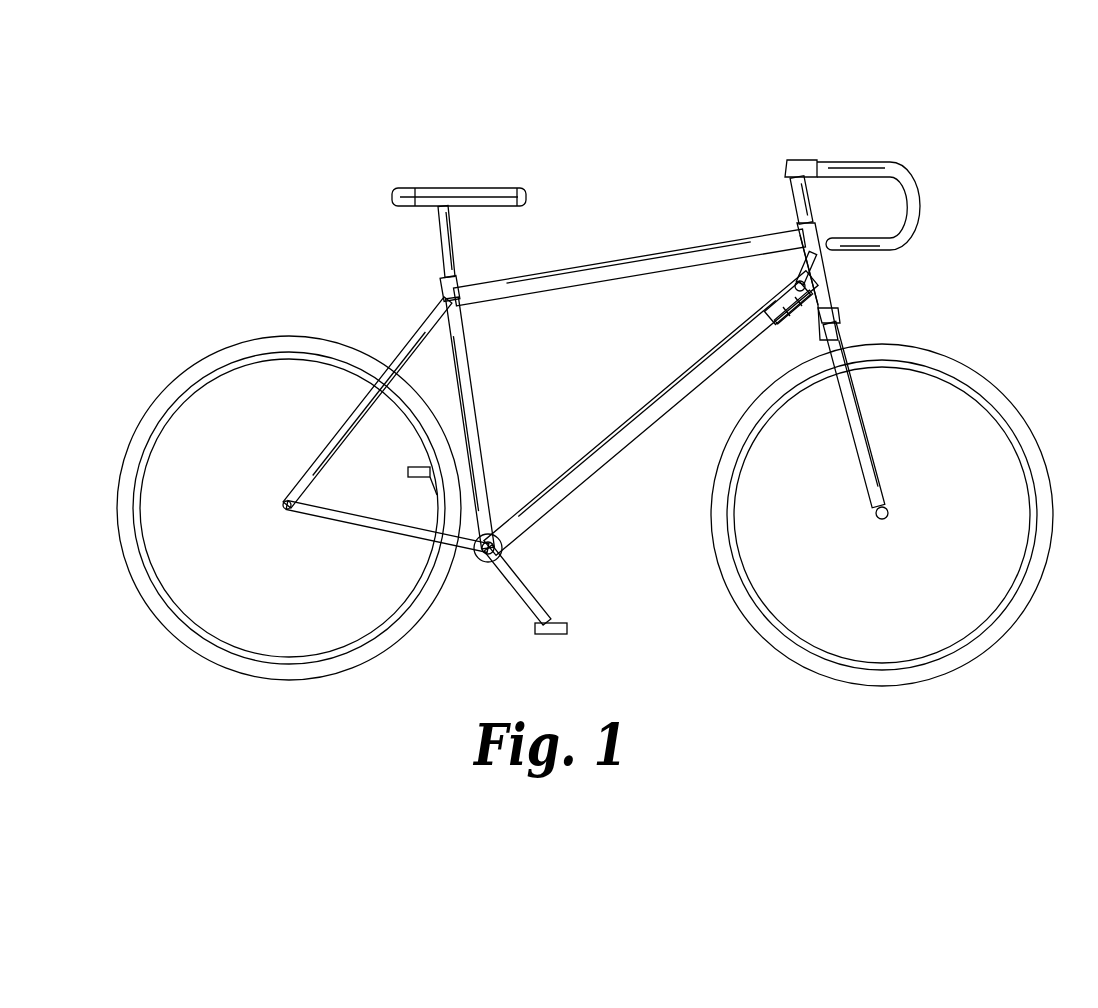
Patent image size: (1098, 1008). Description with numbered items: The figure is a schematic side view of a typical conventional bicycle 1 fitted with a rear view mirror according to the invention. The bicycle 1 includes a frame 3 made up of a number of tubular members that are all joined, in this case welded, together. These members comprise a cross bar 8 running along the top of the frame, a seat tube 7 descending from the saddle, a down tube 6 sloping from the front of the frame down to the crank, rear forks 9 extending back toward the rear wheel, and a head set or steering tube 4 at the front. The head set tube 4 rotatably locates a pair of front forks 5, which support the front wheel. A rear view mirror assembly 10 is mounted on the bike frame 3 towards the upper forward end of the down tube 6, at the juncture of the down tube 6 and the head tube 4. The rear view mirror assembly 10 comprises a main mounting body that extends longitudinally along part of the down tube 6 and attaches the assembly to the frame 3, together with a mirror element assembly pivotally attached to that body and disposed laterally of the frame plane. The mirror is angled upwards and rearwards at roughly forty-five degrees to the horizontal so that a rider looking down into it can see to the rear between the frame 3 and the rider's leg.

The bicycle 1 is at (585, 423).
The frame 3 is at (596, 357).
The head set tube 4 is at (820, 268).
The front forks 5 is at (855, 420).
The down tube 6 is at (613, 448).
The seat tube 7 is at (468, 385).
The cross bar 8 is at (672, 260).
The rear forks 9 is at (337, 438).
The rear view mirror assembly 10 is at (775, 295).